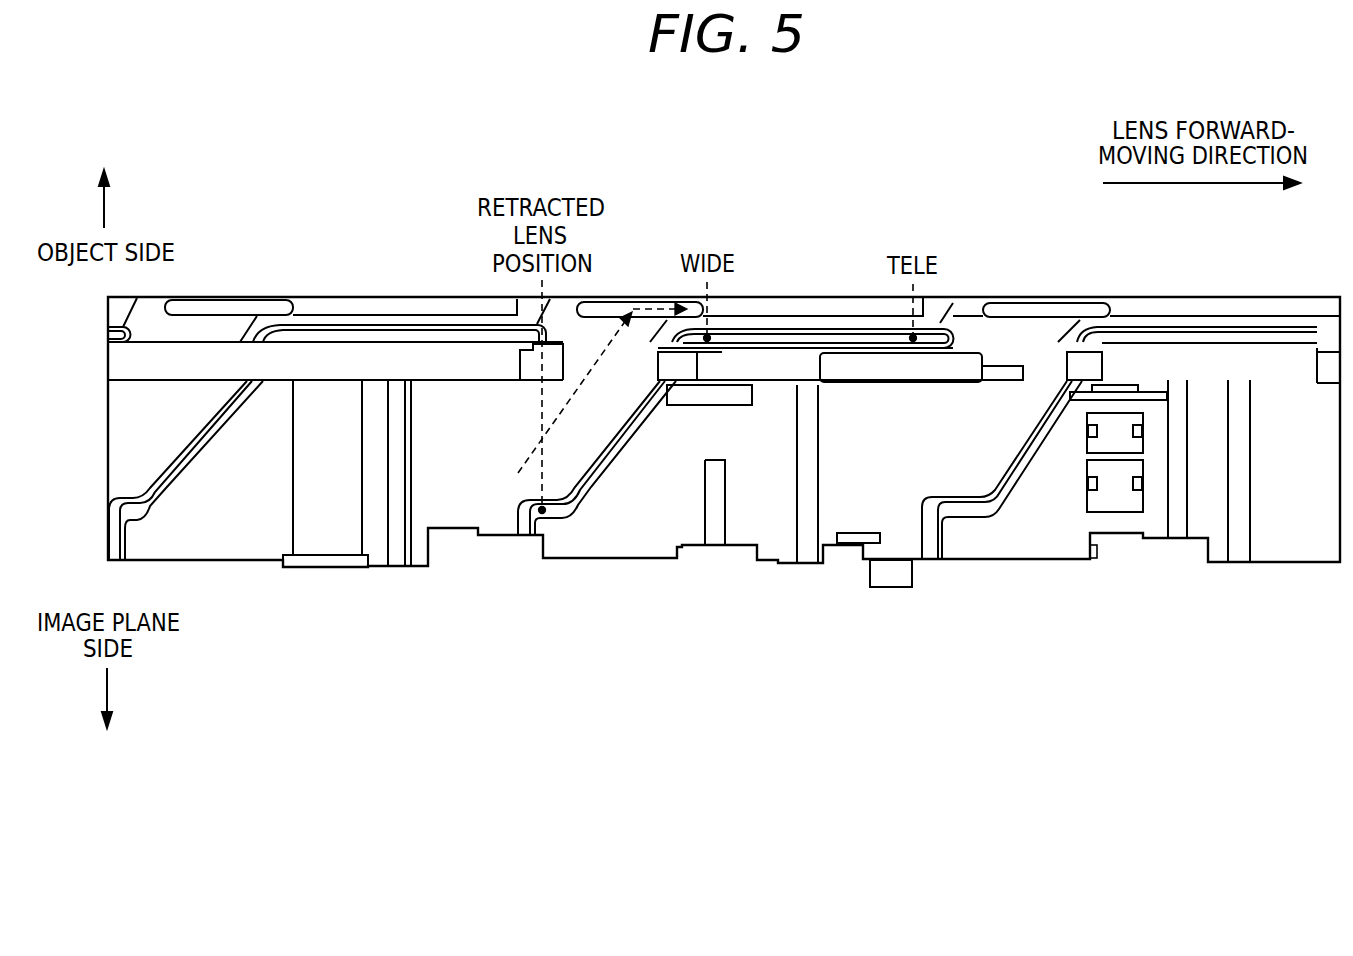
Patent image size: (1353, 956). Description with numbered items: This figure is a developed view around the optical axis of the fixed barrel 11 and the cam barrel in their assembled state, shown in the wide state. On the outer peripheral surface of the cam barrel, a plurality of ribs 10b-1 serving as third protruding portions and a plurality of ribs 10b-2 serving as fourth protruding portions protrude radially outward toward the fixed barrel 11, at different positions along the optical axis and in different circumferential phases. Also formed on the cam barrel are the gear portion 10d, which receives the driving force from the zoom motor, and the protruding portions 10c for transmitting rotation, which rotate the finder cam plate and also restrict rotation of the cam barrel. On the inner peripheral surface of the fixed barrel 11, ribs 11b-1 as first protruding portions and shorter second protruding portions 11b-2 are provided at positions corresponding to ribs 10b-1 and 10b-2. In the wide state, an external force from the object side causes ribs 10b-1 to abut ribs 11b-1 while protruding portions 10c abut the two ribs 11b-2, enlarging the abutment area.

The ribs 10b-1 is at (235, 308).
The ribs 10b-2 is at (557, 372).
The protruding portions for transmitting rotation 10c is at (688, 358).
The gear portion 10d is at (382, 357).
The fixed barrel 11 is at (1228, 316).
The ribs 11b-1 is at (417, 322).
The second protruding portions 11b-2 is at (735, 397).